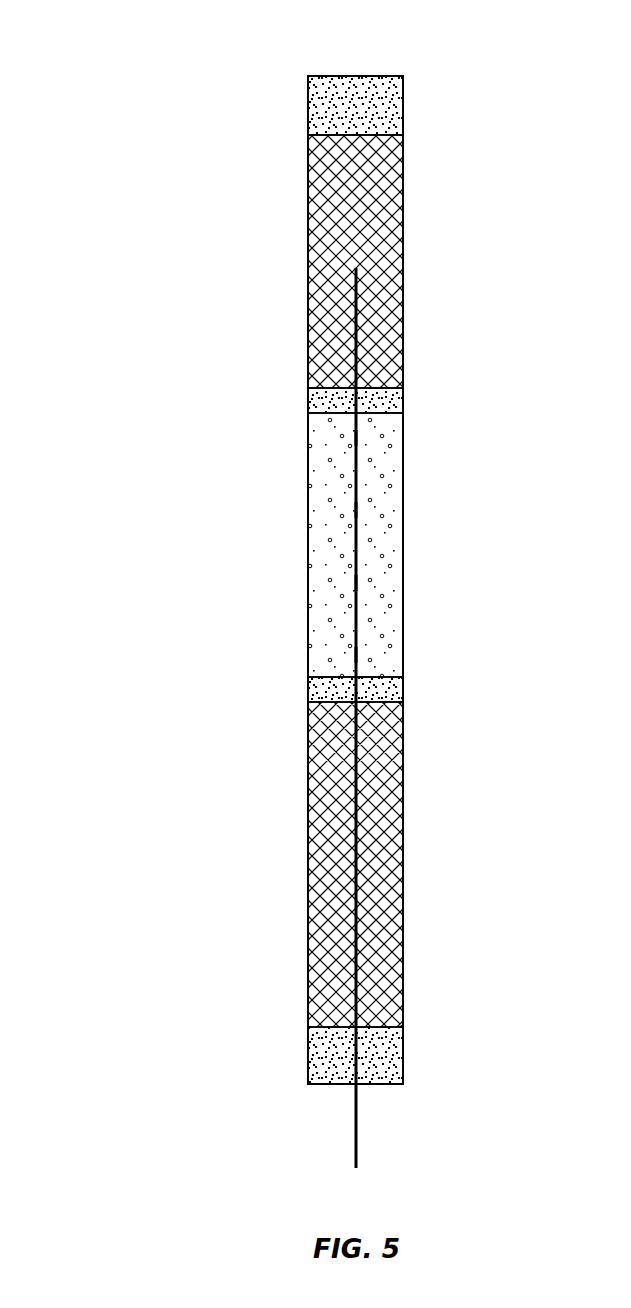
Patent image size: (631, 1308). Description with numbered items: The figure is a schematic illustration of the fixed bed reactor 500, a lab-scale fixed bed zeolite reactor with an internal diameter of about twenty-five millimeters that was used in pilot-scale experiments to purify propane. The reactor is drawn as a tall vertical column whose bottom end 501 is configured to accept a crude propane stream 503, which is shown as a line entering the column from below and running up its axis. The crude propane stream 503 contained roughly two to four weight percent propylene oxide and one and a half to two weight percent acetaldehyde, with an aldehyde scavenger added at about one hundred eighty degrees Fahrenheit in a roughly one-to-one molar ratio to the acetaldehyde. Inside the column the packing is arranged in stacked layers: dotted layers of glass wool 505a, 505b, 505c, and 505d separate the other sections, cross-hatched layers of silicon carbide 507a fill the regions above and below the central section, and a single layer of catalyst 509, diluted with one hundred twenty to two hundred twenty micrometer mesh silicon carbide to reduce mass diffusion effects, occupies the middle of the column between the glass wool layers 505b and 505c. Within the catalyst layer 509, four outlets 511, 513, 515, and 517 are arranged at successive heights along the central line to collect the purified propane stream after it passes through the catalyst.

The fixed bed reactor 500 is at (116, 42).
The bottom end 501 is at (323, 1087).
The crude propane stream 503 is at (358, 1137).
The layer of glass wool 505a is at (405, 105).
The layer of glass wool 505b is at (405, 400).
The layer of glass wool 505c is at (405, 690).
The layer of glass wool 505d is at (405, 1052).
The layer of silicon carbide 507a is at (404, 262).
The layer of catalyst 509 is at (405, 543).
The outlet 511 is at (355, 438).
The outlet 513 is at (355, 510).
The outlet 515 is at (355, 583).
The outlet 517 is at (355, 655).